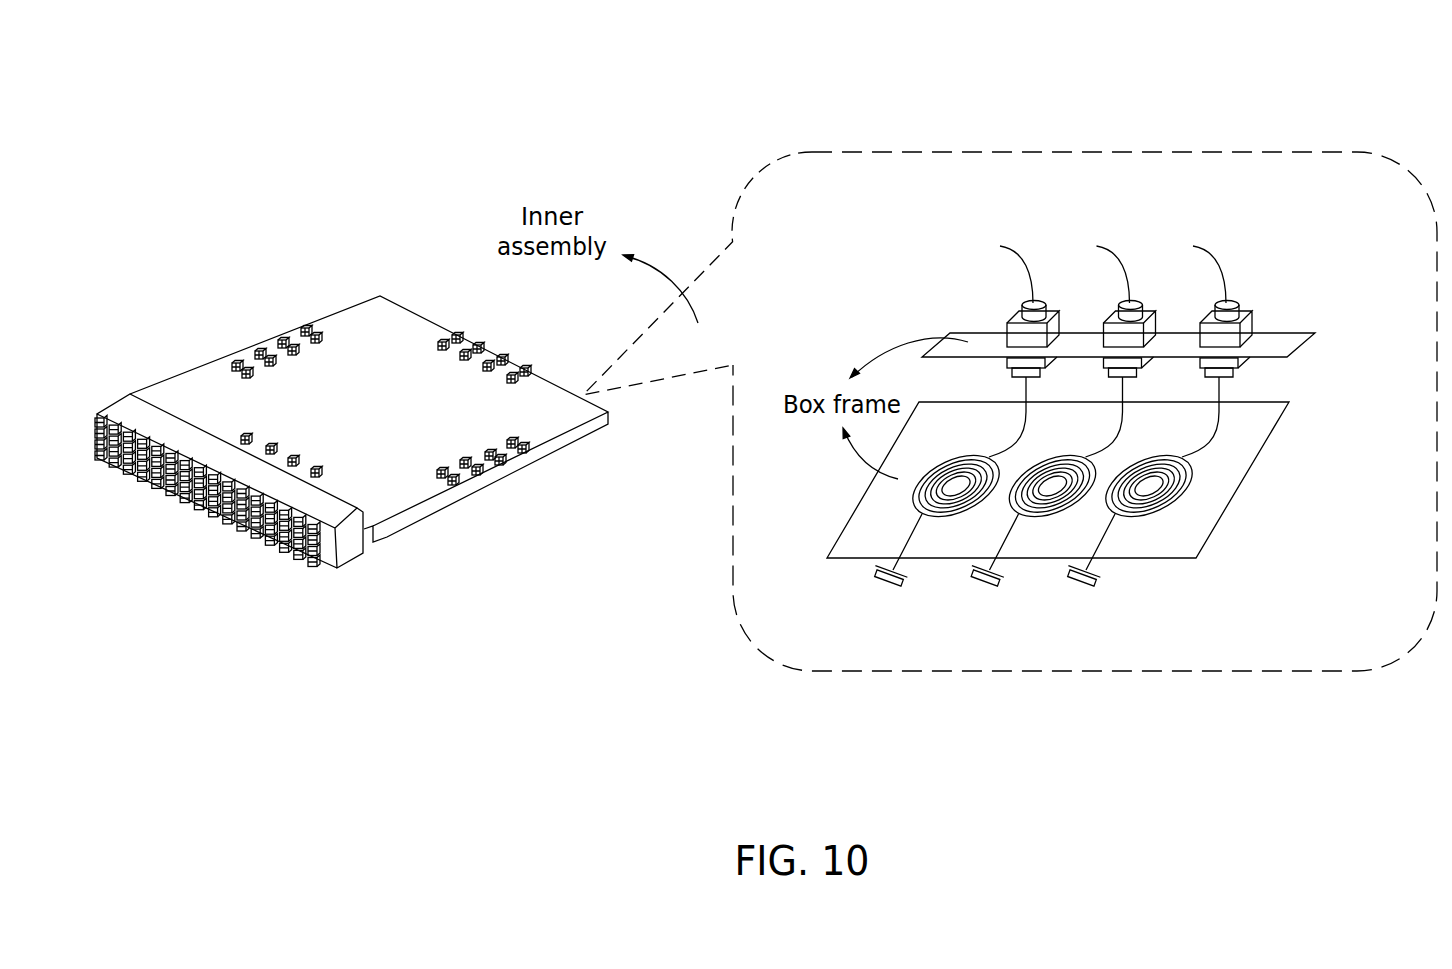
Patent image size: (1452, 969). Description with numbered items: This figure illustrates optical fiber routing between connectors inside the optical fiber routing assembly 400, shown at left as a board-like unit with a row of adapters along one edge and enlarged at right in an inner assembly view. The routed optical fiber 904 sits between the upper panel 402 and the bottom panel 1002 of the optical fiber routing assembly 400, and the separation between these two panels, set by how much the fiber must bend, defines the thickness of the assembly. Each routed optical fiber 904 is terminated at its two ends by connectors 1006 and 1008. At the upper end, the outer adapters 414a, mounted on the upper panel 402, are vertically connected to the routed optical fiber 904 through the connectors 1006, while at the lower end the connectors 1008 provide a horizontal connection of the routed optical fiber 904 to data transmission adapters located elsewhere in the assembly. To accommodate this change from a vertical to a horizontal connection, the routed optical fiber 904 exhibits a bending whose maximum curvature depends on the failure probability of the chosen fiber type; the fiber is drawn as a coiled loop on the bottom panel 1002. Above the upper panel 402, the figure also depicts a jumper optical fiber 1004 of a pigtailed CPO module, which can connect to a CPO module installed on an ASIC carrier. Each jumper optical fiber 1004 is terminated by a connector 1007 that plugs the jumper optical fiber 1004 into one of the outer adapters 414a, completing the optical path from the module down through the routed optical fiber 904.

The optical fiber routing assembly 400 is at (266, 298).
The upper panel 402 is at (1283, 342).
The outer adapter 414a is at (1192, 318).
The jumper optical fiber 1004 is at (998, 232).
The connector 1007 is at (1017, 308).
The connector 1006 is at (1238, 372).
The bottom panel 1002 is at (1194, 531).
The routed optical fiber 904 is at (1195, 485).
The connector 1008 is at (890, 597).